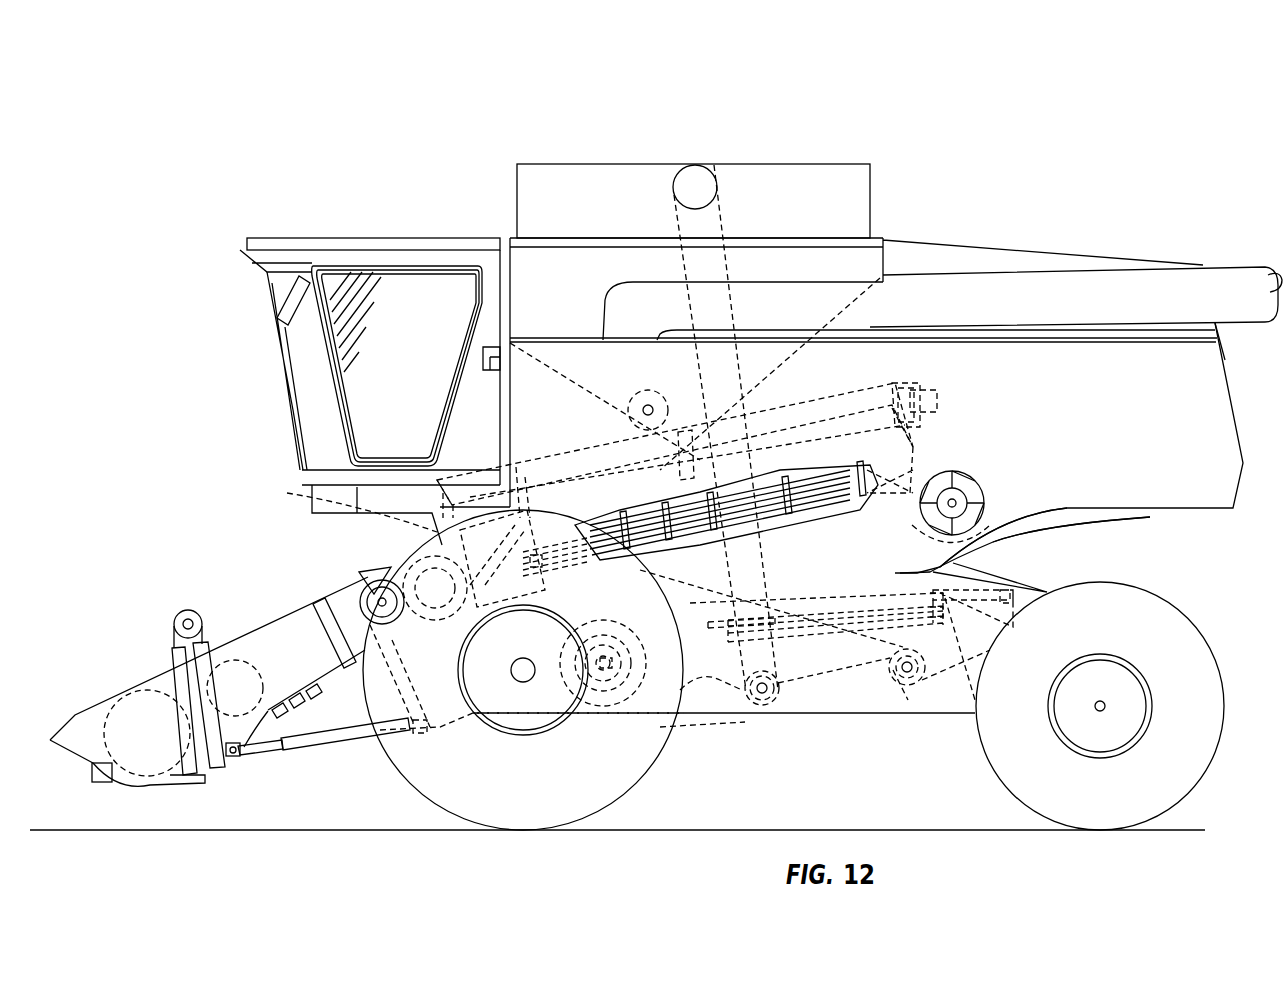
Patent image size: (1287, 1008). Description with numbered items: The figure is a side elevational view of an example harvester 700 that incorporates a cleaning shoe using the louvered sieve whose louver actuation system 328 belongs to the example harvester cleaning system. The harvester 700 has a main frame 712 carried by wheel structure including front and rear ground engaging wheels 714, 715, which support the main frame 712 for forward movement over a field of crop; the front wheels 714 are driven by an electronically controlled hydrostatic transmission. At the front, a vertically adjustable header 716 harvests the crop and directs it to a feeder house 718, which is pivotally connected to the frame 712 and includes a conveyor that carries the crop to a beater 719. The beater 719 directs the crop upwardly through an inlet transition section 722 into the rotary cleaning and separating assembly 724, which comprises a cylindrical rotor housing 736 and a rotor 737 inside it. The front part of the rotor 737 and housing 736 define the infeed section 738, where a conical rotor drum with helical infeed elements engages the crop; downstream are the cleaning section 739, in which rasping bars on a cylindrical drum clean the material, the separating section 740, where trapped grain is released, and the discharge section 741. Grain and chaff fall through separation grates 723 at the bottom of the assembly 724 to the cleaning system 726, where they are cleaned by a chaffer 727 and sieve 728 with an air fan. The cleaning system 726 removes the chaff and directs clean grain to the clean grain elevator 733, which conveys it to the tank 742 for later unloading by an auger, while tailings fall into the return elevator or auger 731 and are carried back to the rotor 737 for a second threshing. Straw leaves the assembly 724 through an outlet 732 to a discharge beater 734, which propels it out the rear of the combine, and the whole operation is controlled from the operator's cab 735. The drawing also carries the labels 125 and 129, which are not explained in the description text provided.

The harvester 700 is at (1186, 140).
The main frame 712 is at (1012, 582).
The front ground engaging wheels 714 is at (375, 585).
The rear ground engaging wheels 715 is at (1225, 690).
The header 716 is at (105, 665).
The feeder house 718 is at (283, 622).
The beater 719 is at (400, 550).
The inlet transition section 722 is at (287, 493).
The separation grates 723 is at (803, 532).
The rotary cleaning and separating assembly 724 is at (594, 465).
The cleaning system 726 is at (855, 595).
The chaffer 727 is at (955, 602).
The sieve 728 is at (930, 635).
The return elevator or auger 731 is at (908, 690).
The outlet 732 is at (935, 437).
The clean grain elevator 733 is at (737, 332).
The discharge beater 734 is at (985, 482).
The operator's cab 735 is at (375, 238).
The rotor housing 736 is at (863, 385).
The rotor 737 is at (905, 392).
The infeed section 738 is at (472, 460).
The cleaning section 739 is at (610, 432).
The separating section 740 is at (775, 395).
The discharge section 741 is at (910, 365).
The tank 742 is at (895, 250).
The drive pulley 125 is at (615, 661).
The belt 129 is at (597, 708).
The louver actuation system 328 is at (1115, 518).